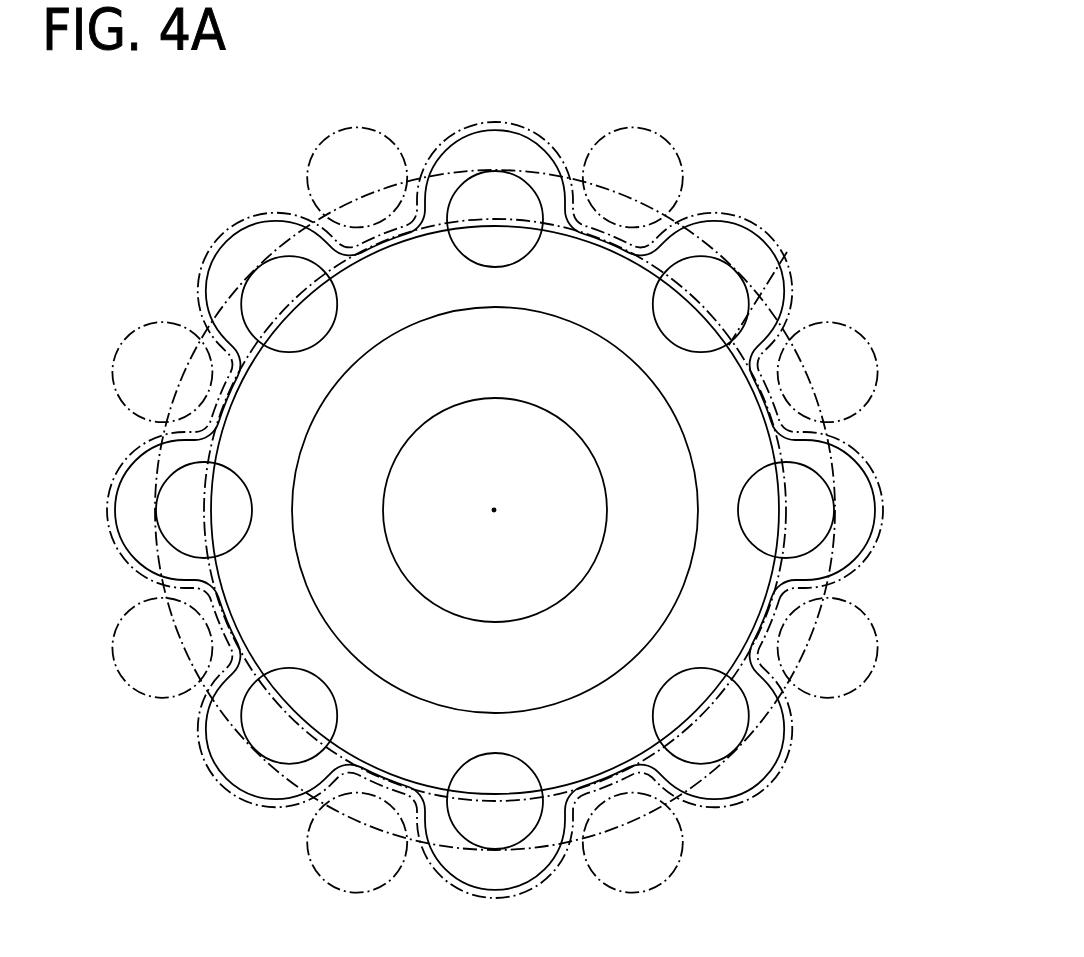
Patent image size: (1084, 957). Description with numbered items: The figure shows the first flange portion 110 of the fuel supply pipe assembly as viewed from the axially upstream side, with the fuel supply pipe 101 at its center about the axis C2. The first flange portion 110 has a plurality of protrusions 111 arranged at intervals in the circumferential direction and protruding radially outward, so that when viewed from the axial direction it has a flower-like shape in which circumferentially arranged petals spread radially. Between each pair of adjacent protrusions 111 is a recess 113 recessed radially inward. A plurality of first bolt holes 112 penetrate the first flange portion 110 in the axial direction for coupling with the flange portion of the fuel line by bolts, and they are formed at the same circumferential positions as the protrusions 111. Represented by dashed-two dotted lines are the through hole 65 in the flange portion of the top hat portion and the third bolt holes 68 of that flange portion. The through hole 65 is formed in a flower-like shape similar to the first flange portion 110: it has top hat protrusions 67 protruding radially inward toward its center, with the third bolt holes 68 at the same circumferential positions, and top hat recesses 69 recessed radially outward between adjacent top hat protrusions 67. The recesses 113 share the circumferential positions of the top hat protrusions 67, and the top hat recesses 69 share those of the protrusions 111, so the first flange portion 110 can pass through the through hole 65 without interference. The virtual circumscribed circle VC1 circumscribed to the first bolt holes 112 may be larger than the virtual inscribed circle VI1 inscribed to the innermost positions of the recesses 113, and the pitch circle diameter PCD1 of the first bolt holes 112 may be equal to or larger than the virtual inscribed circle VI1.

The through hole 65 is at (522, 485).
The top hat protrusion 67 is at (700, 216).
The third bolt hole 68 is at (858, 340).
The top hat recess 69 is at (753, 222).
The virtual circumscribed circle VC1 is at (787, 253).
The virtual inscribed circle VI1 is at (790, 292).
The first flange portion 110 is at (537, 510).
The protrusion 111 is at (536, 510).
The first bolt hole 112 is at (820, 517).
The recess 113 is at (772, 602).
The pitch circle diameter PCD1 is at (718, 698).
The fuel supply pipe 101 is at (493, 621).
The center axis C2 is at (495, 509).